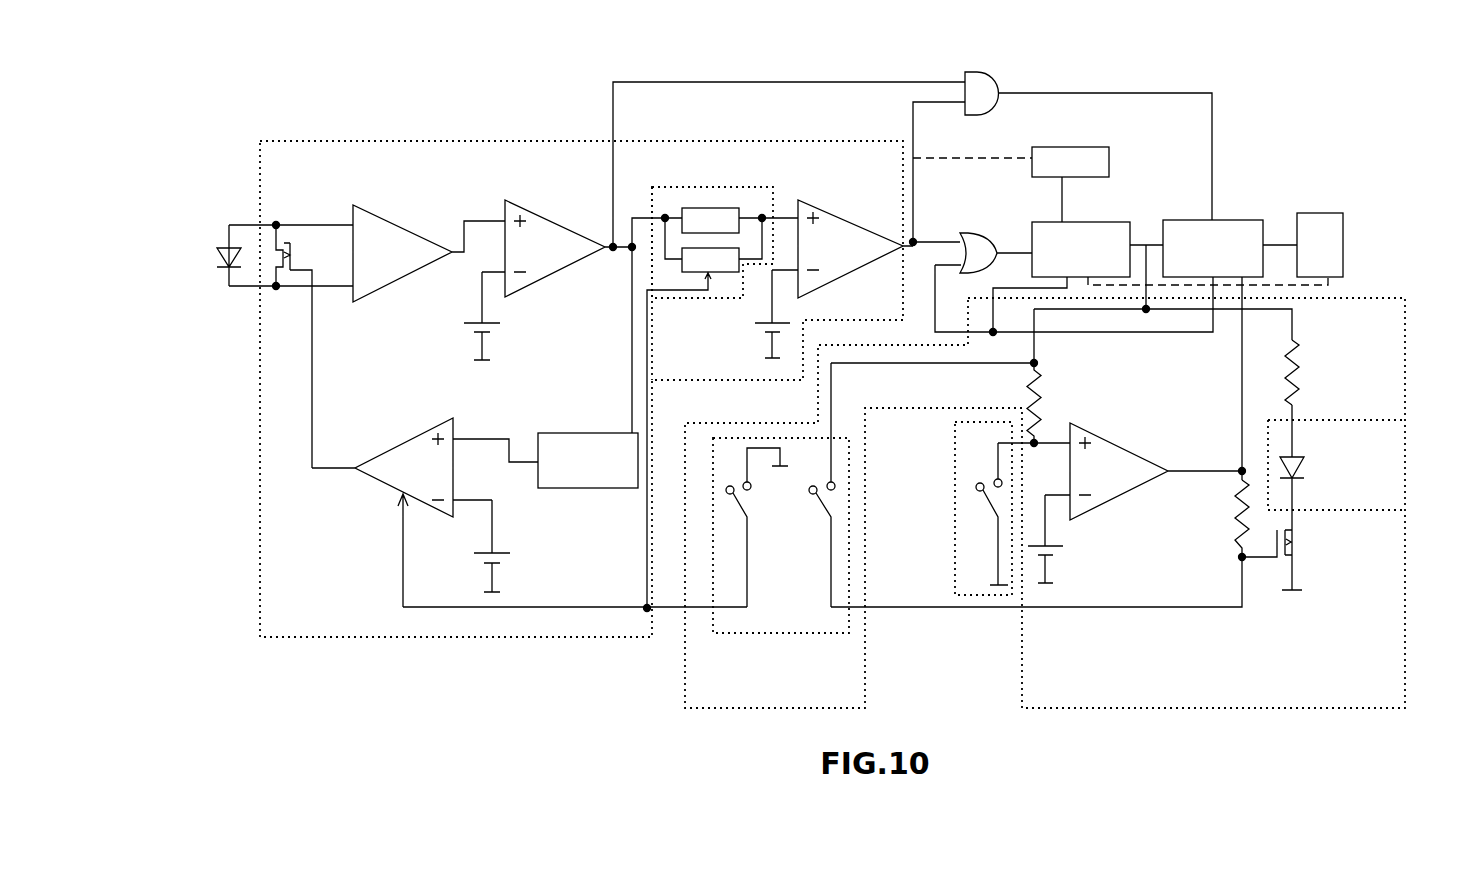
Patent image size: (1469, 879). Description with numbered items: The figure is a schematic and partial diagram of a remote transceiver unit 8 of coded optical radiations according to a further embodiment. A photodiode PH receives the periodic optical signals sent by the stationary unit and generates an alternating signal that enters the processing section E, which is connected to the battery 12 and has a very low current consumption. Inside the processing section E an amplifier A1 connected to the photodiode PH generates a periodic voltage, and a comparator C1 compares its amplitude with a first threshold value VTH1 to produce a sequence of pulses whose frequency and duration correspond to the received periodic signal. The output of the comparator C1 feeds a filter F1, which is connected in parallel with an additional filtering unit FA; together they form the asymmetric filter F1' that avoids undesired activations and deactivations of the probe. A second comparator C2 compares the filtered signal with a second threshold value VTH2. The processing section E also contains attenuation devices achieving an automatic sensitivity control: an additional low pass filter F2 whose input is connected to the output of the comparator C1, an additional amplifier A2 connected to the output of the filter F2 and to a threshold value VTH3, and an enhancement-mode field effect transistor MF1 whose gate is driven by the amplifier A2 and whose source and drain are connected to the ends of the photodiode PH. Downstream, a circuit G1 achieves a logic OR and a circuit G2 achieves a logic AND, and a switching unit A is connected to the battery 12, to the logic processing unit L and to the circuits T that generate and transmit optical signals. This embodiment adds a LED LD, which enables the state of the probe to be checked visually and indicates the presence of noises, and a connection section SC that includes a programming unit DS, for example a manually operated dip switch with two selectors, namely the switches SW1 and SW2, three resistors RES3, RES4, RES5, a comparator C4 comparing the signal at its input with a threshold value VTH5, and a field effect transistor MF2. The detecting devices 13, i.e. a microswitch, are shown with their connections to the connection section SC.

The photodiode PH is at (229, 247).
The field effect transistor MF1 is at (290, 258).
The amplifier A1 is at (402, 252).
The comparator C1 is at (552, 243).
The first threshold value VTH1 is at (445, 316).
The asymmetric filter F1' is at (723, 167).
The filter F1 is at (705, 354).
The additional filtering unit FA is at (730, 260).
The second comparator C2 is at (837, 240).
The second threshold value VTH2 is at (736, 314).
The logic AND circuit G2 is at (980, 90).
The logic OR circuit G1 is at (977, 233).
The battery 12 is at (1078, 165).
The switching unit A is at (1102, 240).
The logic processing unit L is at (1223, 242).
The circuits for generating and transmitting optical signals T is at (1310, 237).
The resistor RES3 is at (1035, 387).
The comparator C4 is at (1112, 468).
The threshold value VTH5 is at (1086, 539).
The resistor RES5 is at (1293, 393).
The resistor RES4 is at (1242, 523).
The LED LD is at (1302, 459).
The field effect transistor MF2 is at (1295, 546).
The connection section SC is at (1387, 588).
The switch SW1 is at (743, 508).
The switch SW2 is at (828, 507).
The detecting devices 13 is at (980, 570).
The programming unit DS is at (775, 608).
The additional amplifier A2 is at (400, 462).
The additional low pass filter F2 is at (573, 460).
The threshold value VTH3 is at (525, 548).
The processing section E is at (522, 620).
The remote transceiver unit 8 is at (393, 704).